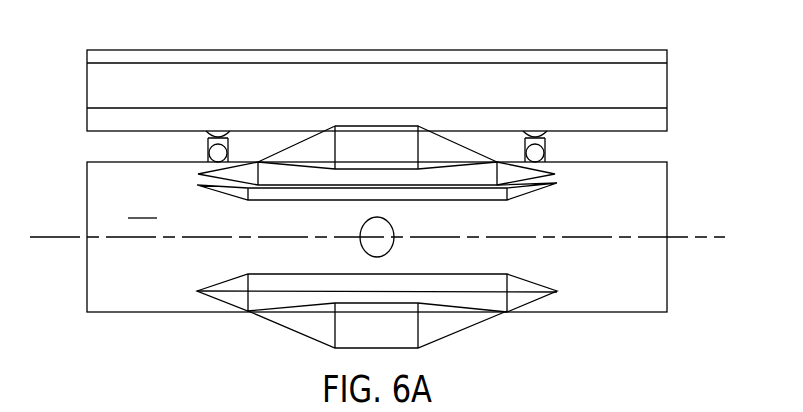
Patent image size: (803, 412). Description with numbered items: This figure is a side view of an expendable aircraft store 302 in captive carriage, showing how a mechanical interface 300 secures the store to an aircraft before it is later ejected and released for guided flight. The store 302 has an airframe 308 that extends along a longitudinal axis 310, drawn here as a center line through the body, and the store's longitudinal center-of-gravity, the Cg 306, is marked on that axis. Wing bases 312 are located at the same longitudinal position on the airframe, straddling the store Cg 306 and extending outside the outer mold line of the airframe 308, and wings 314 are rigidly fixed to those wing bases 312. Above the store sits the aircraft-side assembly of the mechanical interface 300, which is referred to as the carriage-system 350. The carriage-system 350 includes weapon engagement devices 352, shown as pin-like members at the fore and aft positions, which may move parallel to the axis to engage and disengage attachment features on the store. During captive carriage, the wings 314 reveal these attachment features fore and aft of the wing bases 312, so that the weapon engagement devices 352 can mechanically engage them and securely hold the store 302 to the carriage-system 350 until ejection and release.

The mechanical interface 300 is at (597, 38).
The carriage-system 350 is at (87, 92).
The weapon engagement devices 352 is at (538, 152).
The expendable aircraft store 302 is at (667, 277).
The airframe 308 is at (142, 205).
The longitudinal axis 310 is at (690, 237).
The center-of-gravity (Cg) 306 is at (396, 234).
The wing bases 312 is at (297, 283).
The wings 314 is at (452, 334).